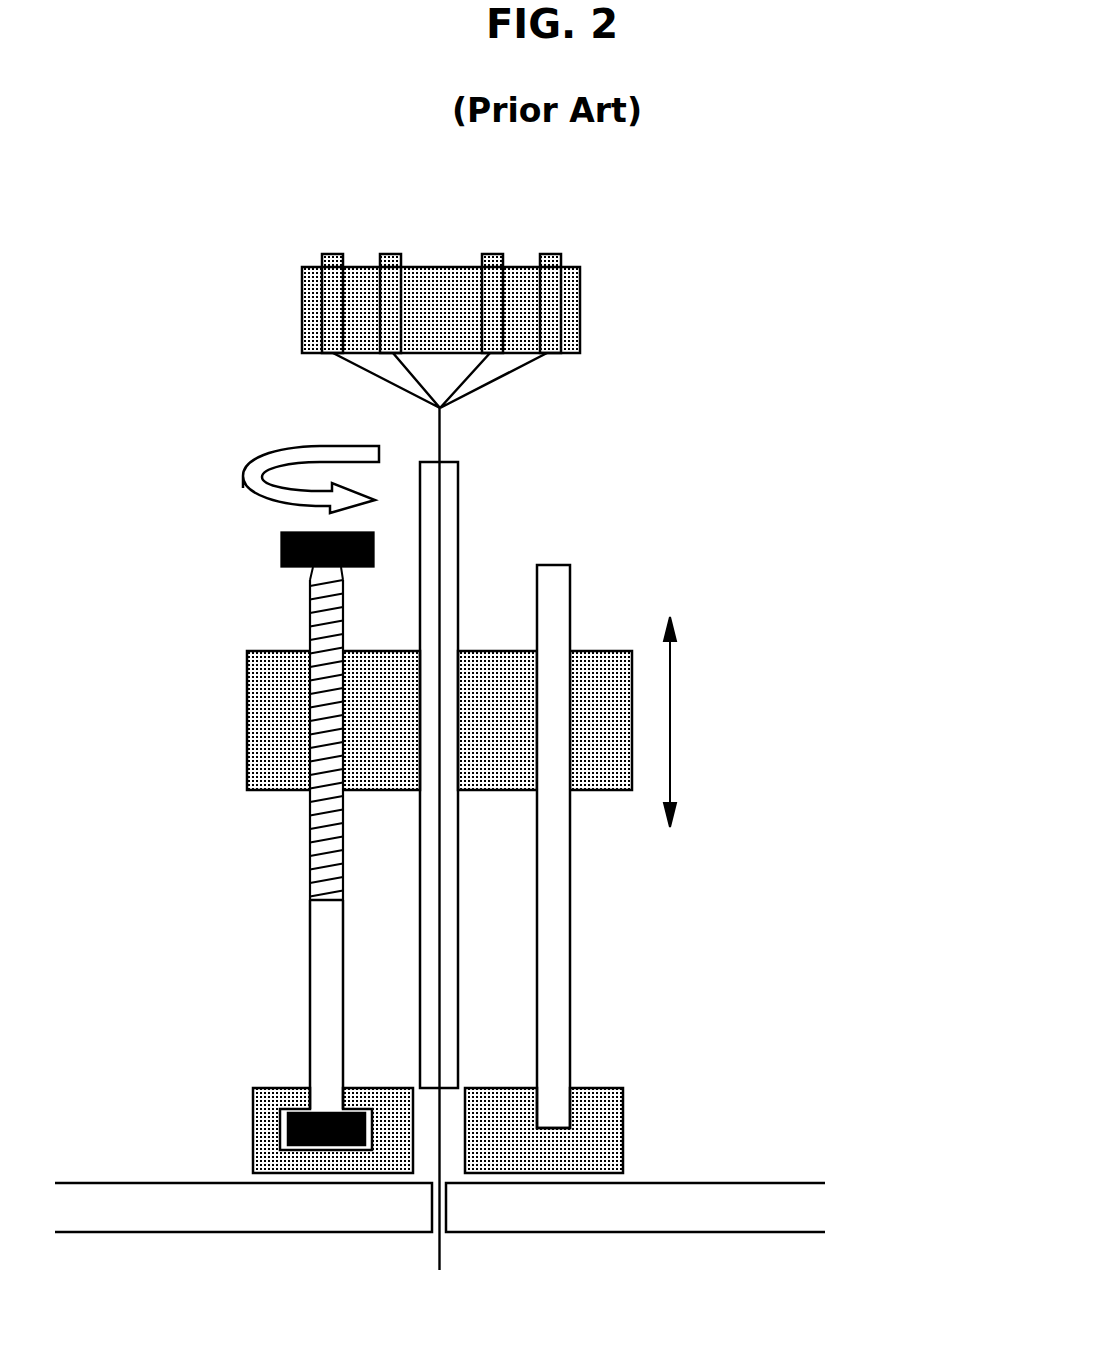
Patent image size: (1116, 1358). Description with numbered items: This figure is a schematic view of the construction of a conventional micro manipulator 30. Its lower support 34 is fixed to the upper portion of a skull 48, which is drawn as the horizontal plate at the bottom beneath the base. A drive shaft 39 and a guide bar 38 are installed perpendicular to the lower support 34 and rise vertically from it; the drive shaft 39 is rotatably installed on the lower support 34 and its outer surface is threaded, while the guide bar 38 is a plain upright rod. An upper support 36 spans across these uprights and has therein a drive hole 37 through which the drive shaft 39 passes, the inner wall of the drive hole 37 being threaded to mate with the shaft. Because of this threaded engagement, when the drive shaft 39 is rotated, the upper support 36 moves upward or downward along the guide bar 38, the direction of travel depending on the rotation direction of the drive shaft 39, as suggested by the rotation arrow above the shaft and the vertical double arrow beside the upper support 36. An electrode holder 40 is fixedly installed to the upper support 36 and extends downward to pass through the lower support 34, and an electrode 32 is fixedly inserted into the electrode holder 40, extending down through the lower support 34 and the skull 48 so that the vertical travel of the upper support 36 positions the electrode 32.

The micro manipulator 30 is at (812, 288).
The electrode 32 is at (438, 1261).
The lower support 34 is at (624, 1128).
The upper support 36 is at (618, 723).
The drive hole 37 is at (310, 677).
The guide bar 38 is at (560, 920).
The drive shaft 39 is at (317, 850).
The electrode holder 40 is at (458, 1008).
The skull 48 is at (715, 1213).